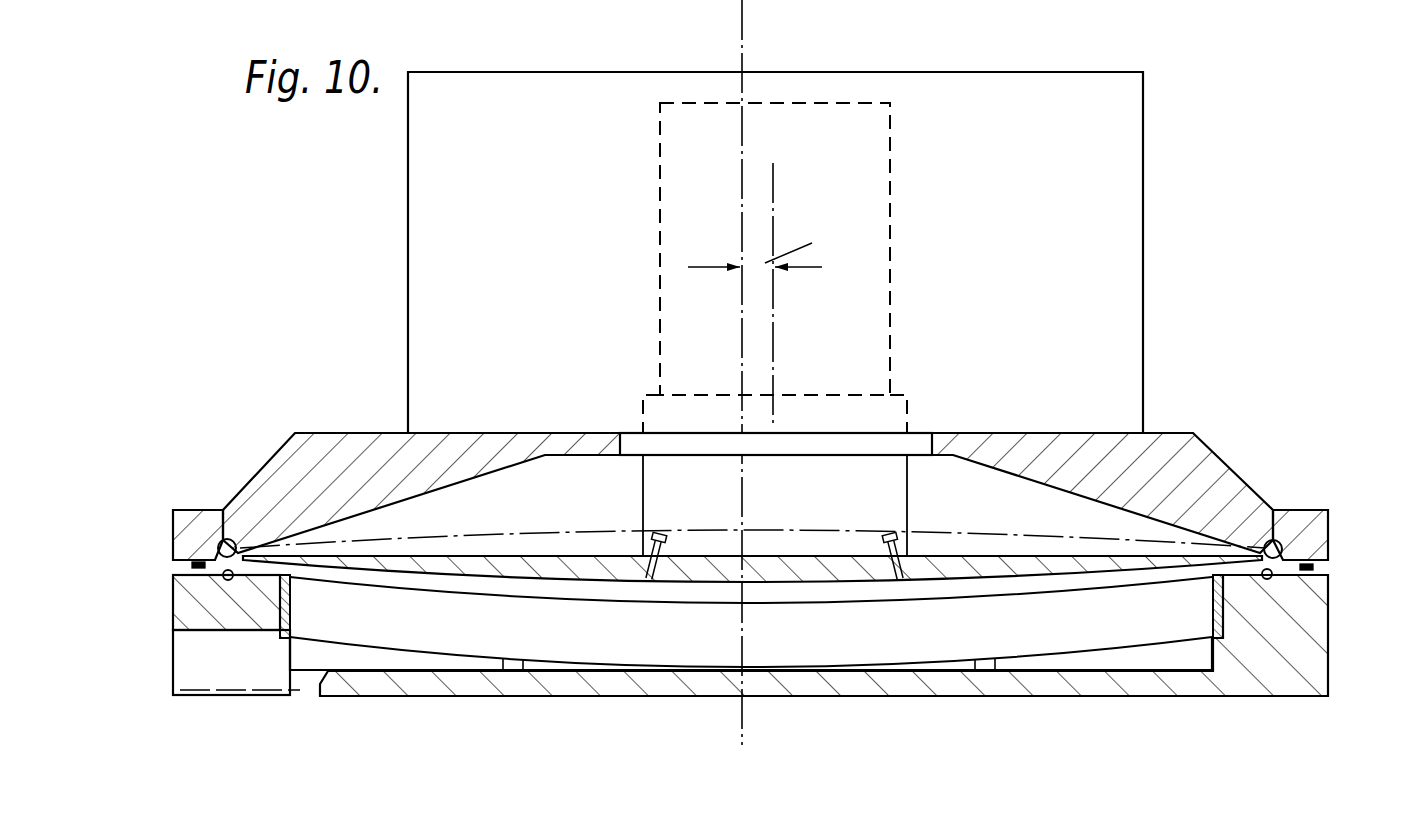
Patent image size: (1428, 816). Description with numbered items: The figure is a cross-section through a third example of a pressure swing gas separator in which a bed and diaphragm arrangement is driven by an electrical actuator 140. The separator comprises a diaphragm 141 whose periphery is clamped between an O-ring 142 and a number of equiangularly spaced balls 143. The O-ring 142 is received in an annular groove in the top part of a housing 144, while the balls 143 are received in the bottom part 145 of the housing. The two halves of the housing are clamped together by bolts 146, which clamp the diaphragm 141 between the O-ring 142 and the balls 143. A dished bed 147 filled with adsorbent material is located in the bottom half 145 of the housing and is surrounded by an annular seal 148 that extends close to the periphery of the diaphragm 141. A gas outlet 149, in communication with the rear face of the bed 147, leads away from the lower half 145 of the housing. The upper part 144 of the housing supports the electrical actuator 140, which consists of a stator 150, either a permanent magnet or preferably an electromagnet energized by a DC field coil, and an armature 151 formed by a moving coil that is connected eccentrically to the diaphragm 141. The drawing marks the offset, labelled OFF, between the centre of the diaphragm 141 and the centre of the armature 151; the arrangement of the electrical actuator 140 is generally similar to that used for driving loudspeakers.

The electrical actuator 140 is at (1112, 218).
The diaphragm 141 is at (512, 557).
The O-ring 142 is at (234, 540).
The balls 143 is at (237, 578).
The housing top part 144 is at (1187, 447).
The housing bottom part 145 is at (1297, 651).
The bolts 146 is at (190, 565).
The dished bed 147 is at (885, 640).
The annular seal 148 is at (278, 595).
The gas outlet 149 is at (203, 669).
The stator 150 is at (430, 197).
The armature 151 is at (865, 366).